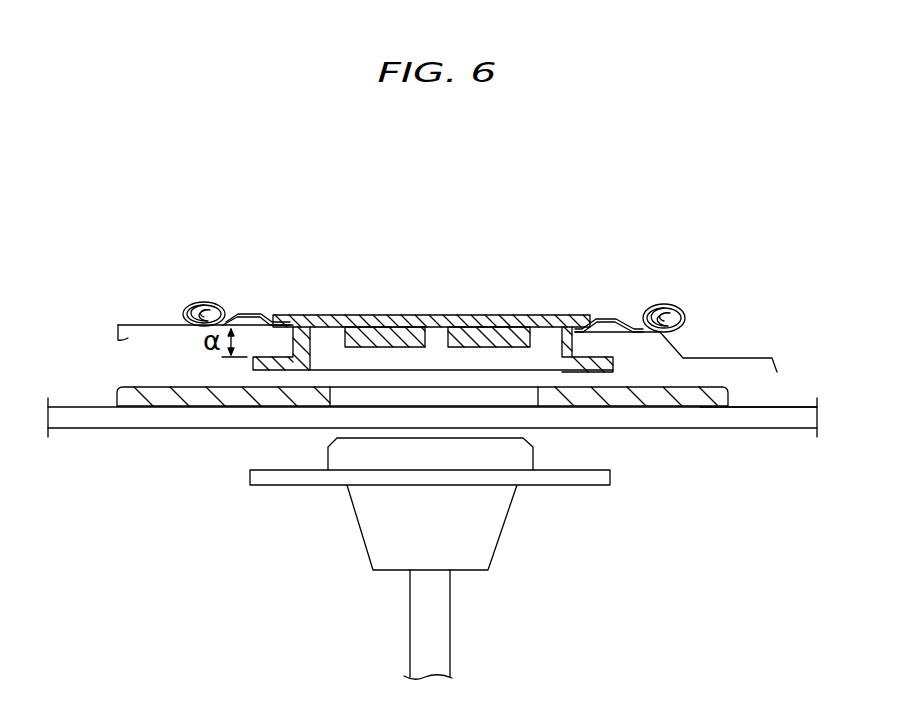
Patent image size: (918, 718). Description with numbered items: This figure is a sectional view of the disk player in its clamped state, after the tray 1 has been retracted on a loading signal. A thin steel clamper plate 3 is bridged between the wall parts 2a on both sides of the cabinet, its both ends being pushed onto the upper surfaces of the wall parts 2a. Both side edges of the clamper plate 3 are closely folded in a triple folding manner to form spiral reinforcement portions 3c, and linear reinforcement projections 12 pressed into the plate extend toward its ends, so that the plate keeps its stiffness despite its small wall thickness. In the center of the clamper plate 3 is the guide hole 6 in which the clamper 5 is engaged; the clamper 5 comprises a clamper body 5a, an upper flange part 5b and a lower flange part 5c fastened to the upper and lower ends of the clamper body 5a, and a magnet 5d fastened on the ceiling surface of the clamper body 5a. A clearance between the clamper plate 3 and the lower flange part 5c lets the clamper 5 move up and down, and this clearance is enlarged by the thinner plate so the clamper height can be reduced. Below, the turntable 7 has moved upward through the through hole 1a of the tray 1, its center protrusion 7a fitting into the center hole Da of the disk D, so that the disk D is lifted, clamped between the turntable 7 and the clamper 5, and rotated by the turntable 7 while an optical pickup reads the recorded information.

The tray 1 is at (715, 430).
The through hole 1a is at (788, 422).
The wall parts 2a is at (125, 341).
The clamper plate 3 is at (393, 281).
The spiral reinforcement portions 3c is at (198, 302).
The clamper 5 is at (443, 273).
The clamper body 5a is at (400, 316).
The upper flange part 5b is at (585, 314).
The lower flange part 5c is at (587, 300).
The magnet 5d is at (347, 327).
The guide hole 6 is at (298, 318).
The turntable 7 is at (272, 481).
The center protrusion 7a is at (514, 460).
The linear reinforcement projections 12 is at (243, 318).
The disk D is at (641, 402).
The center hole Da is at (335, 400).